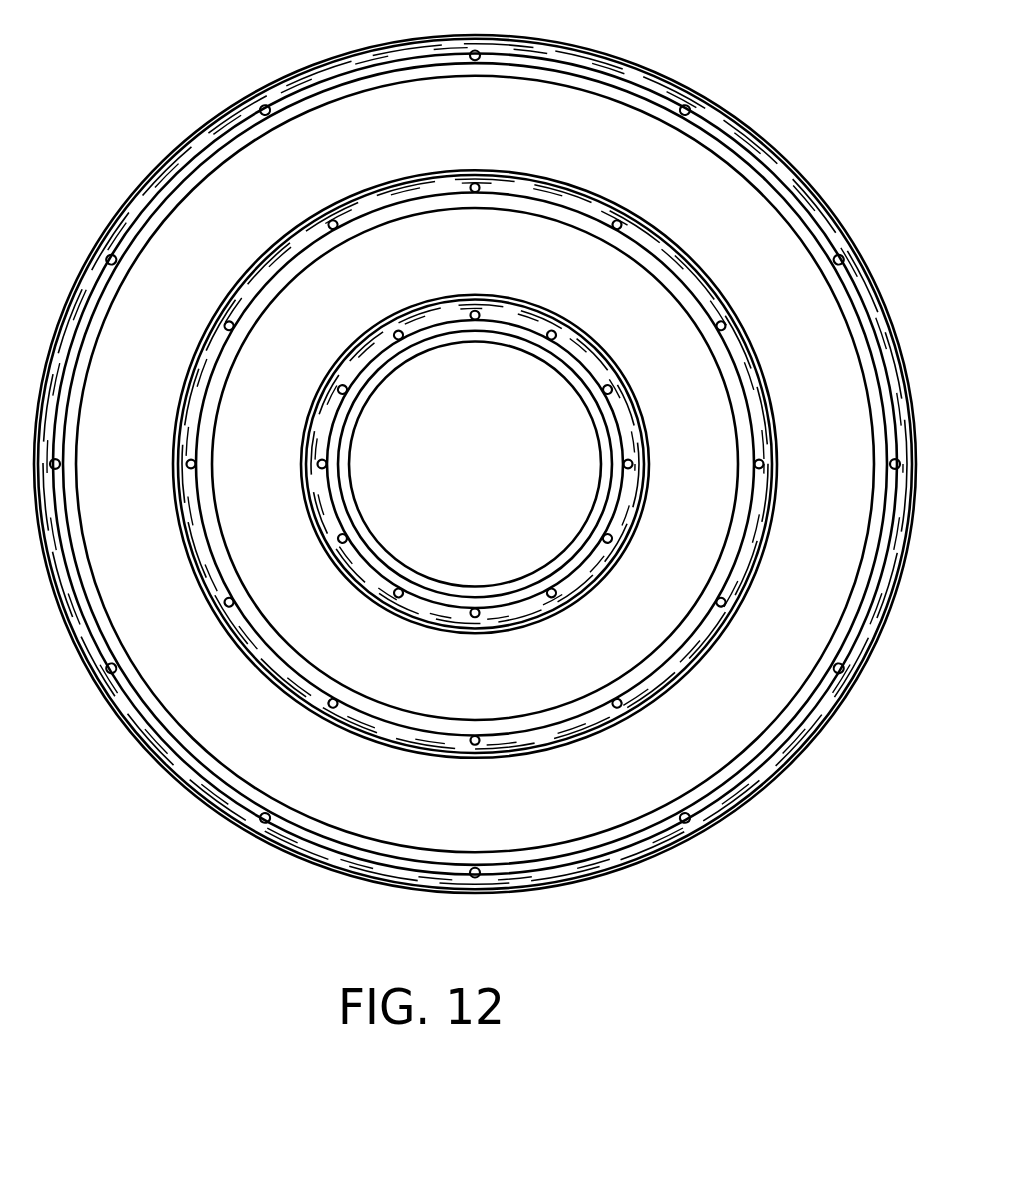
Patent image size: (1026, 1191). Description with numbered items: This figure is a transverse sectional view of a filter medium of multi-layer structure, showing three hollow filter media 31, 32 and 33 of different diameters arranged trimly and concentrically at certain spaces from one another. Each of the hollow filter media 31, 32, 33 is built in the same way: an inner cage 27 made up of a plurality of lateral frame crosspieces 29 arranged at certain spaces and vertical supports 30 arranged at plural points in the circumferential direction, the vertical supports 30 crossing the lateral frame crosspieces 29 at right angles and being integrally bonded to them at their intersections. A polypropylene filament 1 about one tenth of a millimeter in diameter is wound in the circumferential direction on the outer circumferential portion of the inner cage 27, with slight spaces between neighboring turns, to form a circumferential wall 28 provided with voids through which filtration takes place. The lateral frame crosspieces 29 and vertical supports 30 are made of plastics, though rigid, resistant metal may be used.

The polypropylene filament 1 is at (413, 303).
The inner cage 27 is at (416, 561).
The circumferential wall 28 is at (623, 370).
The lateral frame crosspieces 29 is at (363, 383).
The vertical supports 30 is at (404, 336).
The hollow filter medium 31 is at (306, 390).
The hollow filter medium 32 is at (195, 312).
The hollow filter medium 33 is at (125, 184).